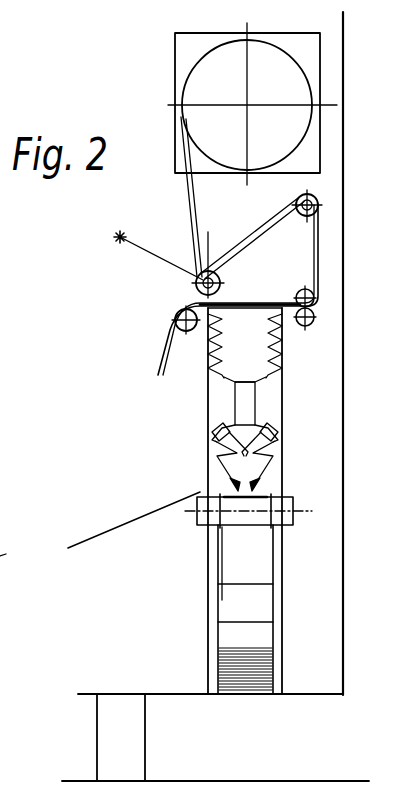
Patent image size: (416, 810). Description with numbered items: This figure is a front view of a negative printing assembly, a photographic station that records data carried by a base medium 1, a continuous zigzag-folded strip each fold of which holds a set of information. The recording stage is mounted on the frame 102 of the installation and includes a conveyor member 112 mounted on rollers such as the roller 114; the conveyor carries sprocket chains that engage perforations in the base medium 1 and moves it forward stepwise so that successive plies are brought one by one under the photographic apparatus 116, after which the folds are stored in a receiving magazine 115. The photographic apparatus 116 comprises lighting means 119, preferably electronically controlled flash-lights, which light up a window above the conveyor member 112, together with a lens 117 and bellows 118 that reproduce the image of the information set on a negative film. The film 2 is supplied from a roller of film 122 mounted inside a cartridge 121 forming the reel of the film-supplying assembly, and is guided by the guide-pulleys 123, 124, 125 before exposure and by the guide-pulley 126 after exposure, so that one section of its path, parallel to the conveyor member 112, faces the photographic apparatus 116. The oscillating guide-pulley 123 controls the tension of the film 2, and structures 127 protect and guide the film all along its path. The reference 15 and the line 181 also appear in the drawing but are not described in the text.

The base medium 1 is at (250, 560).
The film 2 is at (176, 148).
The support 15 is at (10, 541).
The frame 102 is at (146, 734).
The conveyor member 112 is at (272, 511).
The roller 114 is at (235, 526).
The receiving magazine 115 is at (284, 600).
The photographic apparatus 116 is at (283, 408).
The lens 117 is at (255, 400).
The bellows 118 is at (240, 334).
The lighting means 119 is at (212, 422).
The cartridge 121 is at (320, 68).
The roller of film 122 is at (300, 137).
The guide-pulley 123 is at (196, 285).
The guide-pulley 124 is at (318, 196).
The guide-pulley 125 is at (316, 313).
The guide-pulley 126 is at (174, 318).
The structures 127 is at (184, 200).
The guide line 181 is at (122, 522).